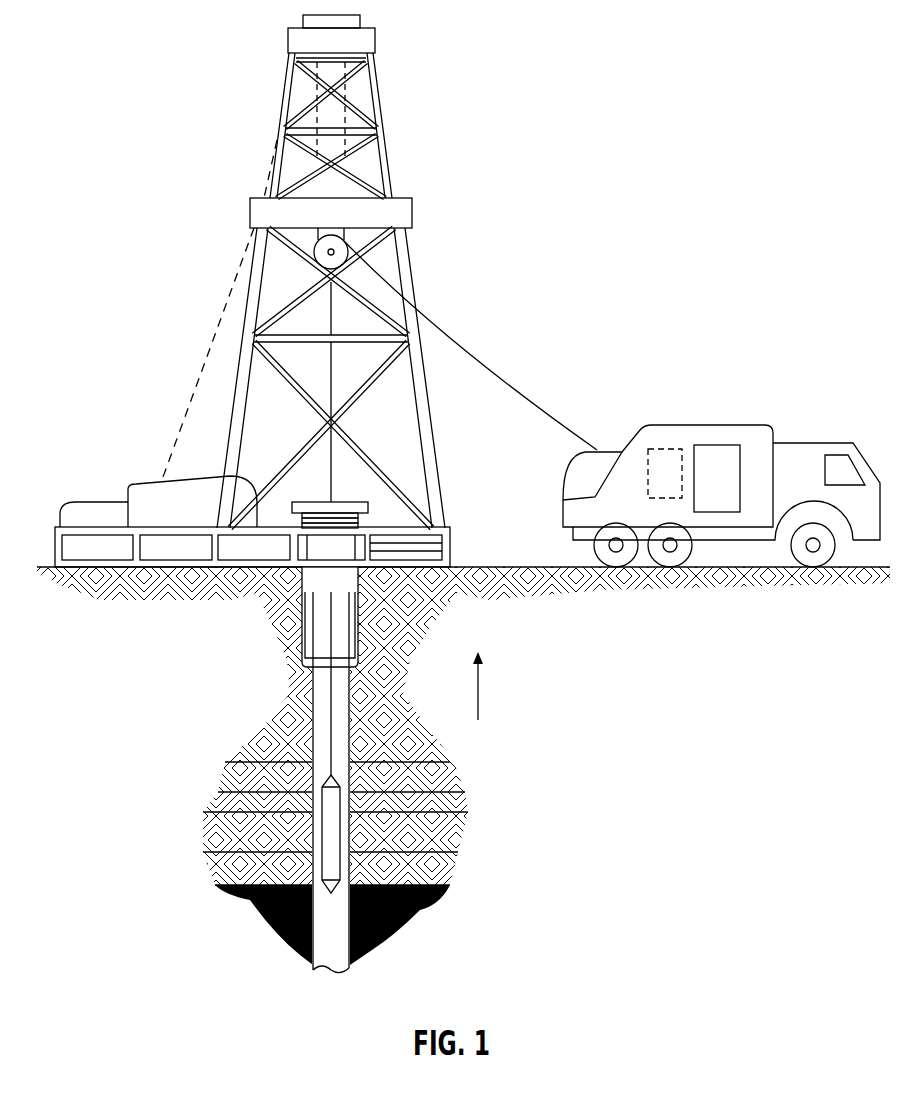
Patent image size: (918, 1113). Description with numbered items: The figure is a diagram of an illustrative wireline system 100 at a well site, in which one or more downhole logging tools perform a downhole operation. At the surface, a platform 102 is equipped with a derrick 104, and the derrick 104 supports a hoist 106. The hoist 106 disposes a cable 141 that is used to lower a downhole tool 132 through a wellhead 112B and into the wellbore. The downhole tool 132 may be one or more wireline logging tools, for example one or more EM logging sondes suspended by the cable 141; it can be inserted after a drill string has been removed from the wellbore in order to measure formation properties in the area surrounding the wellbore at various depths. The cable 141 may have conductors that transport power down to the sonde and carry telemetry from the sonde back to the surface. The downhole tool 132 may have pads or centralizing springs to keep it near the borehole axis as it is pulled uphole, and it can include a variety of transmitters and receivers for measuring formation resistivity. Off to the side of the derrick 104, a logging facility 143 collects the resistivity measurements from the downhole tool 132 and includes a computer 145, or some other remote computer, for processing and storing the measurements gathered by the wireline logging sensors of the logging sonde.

The wireline system 100 is at (686, 66).
The platform 102 is at (57, 527).
The derrick 104 is at (388, 148).
The hoist 106 is at (347, 237).
The wellhead 112B is at (347, 500).
The downhole logging tool 132 is at (333, 860).
The cable 141 is at (463, 349).
The logging facility 143 is at (721, 463).
The computer 145 is at (668, 447).